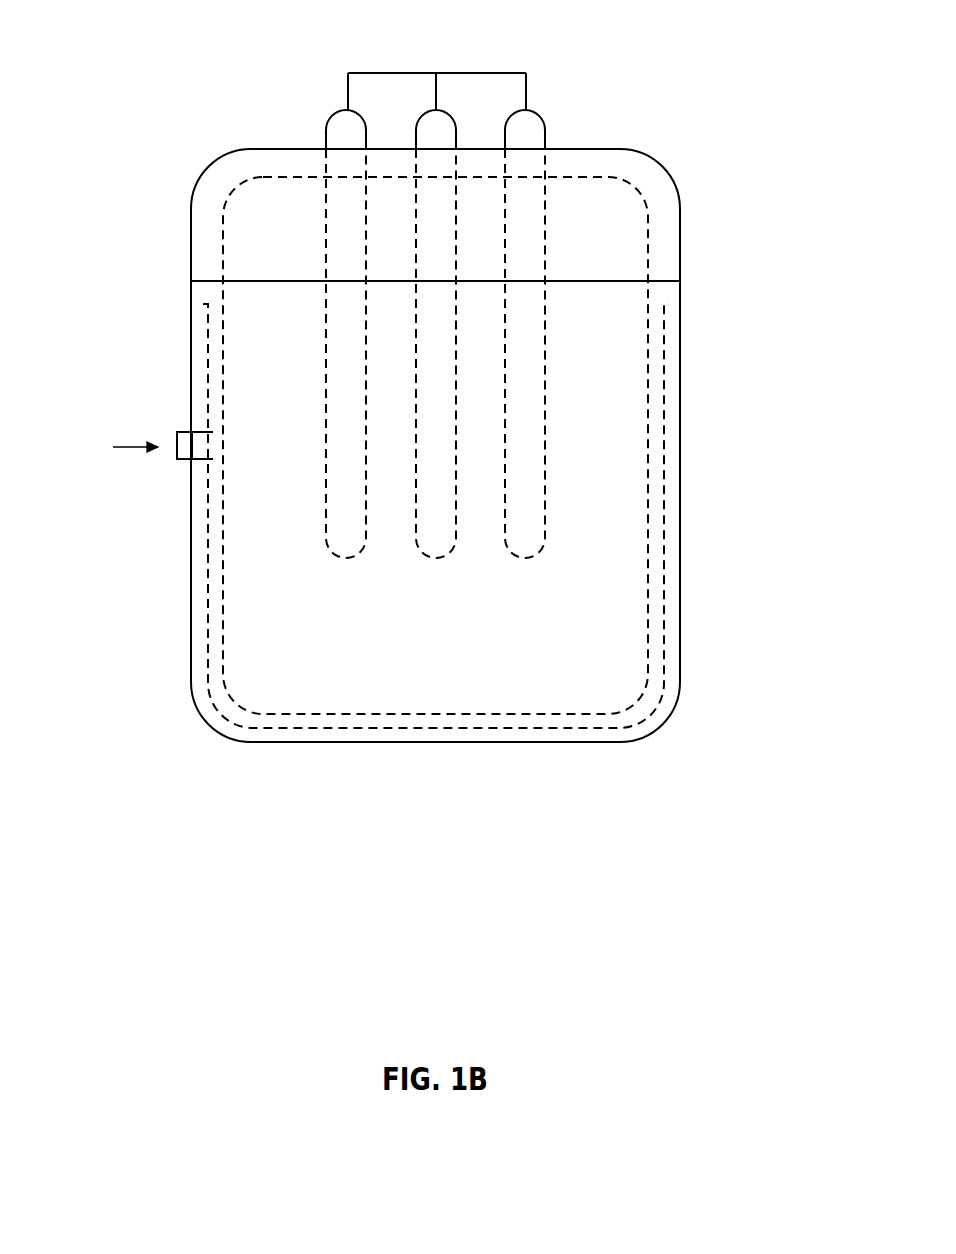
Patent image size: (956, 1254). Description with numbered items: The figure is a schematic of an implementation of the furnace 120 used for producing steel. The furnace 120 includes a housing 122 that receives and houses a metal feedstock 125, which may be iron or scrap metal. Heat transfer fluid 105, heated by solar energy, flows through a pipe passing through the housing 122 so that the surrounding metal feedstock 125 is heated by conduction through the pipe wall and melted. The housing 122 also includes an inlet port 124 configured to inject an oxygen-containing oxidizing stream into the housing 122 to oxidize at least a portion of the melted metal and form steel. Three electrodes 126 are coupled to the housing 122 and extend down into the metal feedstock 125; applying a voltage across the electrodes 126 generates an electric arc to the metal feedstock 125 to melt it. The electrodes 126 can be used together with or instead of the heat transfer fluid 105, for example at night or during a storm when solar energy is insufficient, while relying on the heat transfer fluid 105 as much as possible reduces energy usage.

The furnace 120 is at (455, 1037).
The housing 122 is at (680, 241).
The heat transfer fluid 105 is at (203, 304).
The inlet port 124 is at (190, 432).
The metal feedstock 125 is at (455, 648).
The electrodes 126 is at (328, 90).